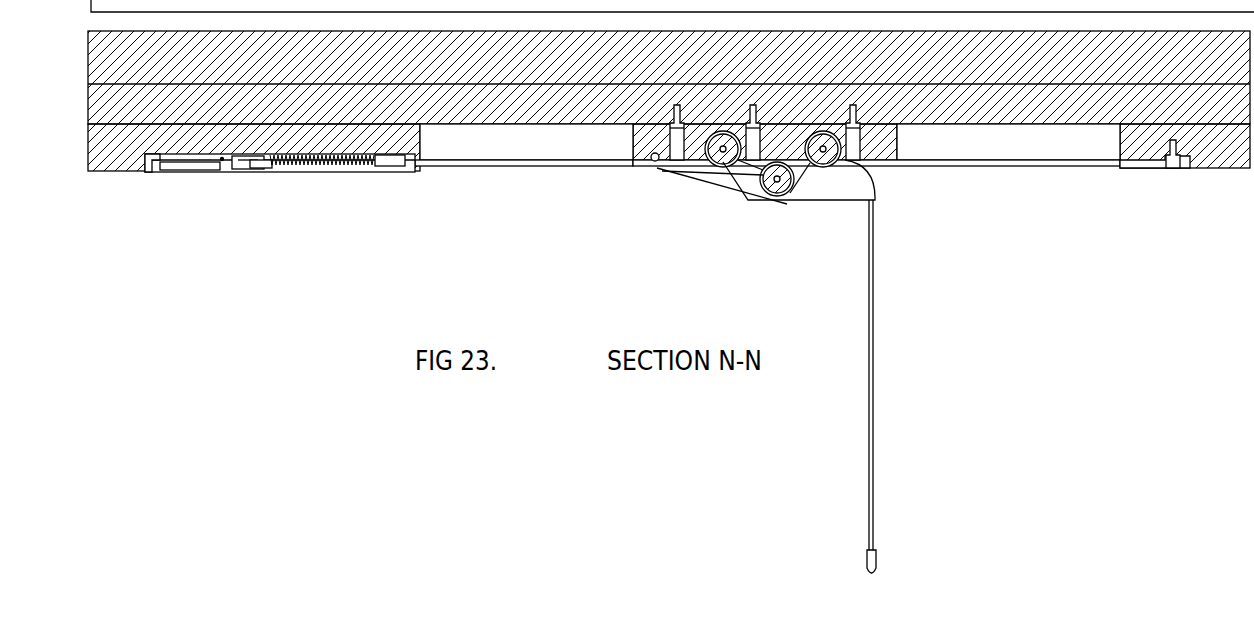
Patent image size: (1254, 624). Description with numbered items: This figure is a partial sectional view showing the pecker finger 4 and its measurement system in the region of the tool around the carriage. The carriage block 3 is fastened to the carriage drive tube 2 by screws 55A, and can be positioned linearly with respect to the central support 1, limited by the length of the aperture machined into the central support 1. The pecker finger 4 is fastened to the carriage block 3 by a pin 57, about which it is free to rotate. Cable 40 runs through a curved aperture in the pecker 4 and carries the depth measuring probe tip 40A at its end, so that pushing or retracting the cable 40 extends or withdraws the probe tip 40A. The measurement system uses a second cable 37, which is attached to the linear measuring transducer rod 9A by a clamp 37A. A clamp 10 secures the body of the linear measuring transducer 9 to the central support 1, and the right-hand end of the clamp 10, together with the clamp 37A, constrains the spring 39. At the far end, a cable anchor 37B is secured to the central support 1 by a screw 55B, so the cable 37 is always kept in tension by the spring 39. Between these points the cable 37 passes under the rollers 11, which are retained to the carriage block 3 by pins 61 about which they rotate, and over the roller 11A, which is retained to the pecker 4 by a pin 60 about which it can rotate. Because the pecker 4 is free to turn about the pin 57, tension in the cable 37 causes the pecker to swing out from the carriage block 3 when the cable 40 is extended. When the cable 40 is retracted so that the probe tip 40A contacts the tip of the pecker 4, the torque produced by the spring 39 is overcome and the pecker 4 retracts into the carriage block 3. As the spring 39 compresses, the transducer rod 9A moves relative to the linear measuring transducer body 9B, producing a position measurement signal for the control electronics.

The central support 1 is at (1210, 170).
The carriage drive tube 2 is at (975, 122).
The carriage block 3 is at (900, 158).
The pecker finger 4 is at (728, 192).
The linear measuring transducer 9 is at (221, 163).
The linear measuring transducer rod 9A is at (240, 175).
The linear measuring transducer body 9B is at (178, 175).
The clamp 10 is at (157, 177).
The rollers 11 is at (805, 148).
The roller 11A is at (795, 198).
The cable 37 is at (490, 170).
The clamp 37A is at (257, 173).
The cable anchor 37B is at (1158, 175).
The spring 39 is at (272, 173).
The cable 40 is at (875, 397).
The depth measuring probe tip 40A is at (877, 560).
The screws 55A is at (673, 137).
The screw 55B is at (1180, 173).
The pin 57 is at (650, 168).
The pin 60 is at (777, 183).
The pins 61 is at (840, 165).